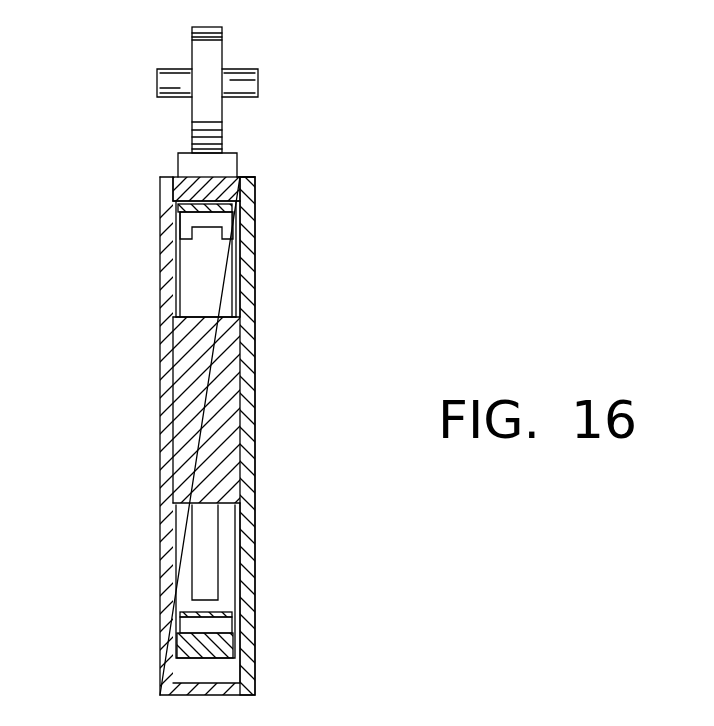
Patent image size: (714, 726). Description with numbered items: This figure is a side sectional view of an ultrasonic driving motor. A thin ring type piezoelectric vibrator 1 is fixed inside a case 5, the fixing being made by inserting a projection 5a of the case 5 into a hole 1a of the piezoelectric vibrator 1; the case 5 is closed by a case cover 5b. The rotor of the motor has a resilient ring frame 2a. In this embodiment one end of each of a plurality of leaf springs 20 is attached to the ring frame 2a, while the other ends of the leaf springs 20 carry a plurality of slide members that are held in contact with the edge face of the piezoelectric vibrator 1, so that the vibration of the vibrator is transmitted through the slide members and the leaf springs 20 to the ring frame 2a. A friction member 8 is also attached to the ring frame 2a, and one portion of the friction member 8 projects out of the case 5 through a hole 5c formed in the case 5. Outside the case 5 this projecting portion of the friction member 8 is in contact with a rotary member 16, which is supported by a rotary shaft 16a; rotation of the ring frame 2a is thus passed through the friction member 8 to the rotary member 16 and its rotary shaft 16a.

The ring type piezoelectric vibrator 1 is at (207, 522).
The hole 1a is at (215, 317).
The ring frame 2a is at (225, 196).
The case 5 is at (165, 639).
The projection 5a is at (173, 423).
The case cover 5b is at (247, 453).
The hole 5c is at (240, 176).
The friction member 8 is at (197, 163).
The rotary member 16 is at (215, 43).
The rotary shaft 16a is at (170, 82).
The leaf springs 20 is at (183, 206).